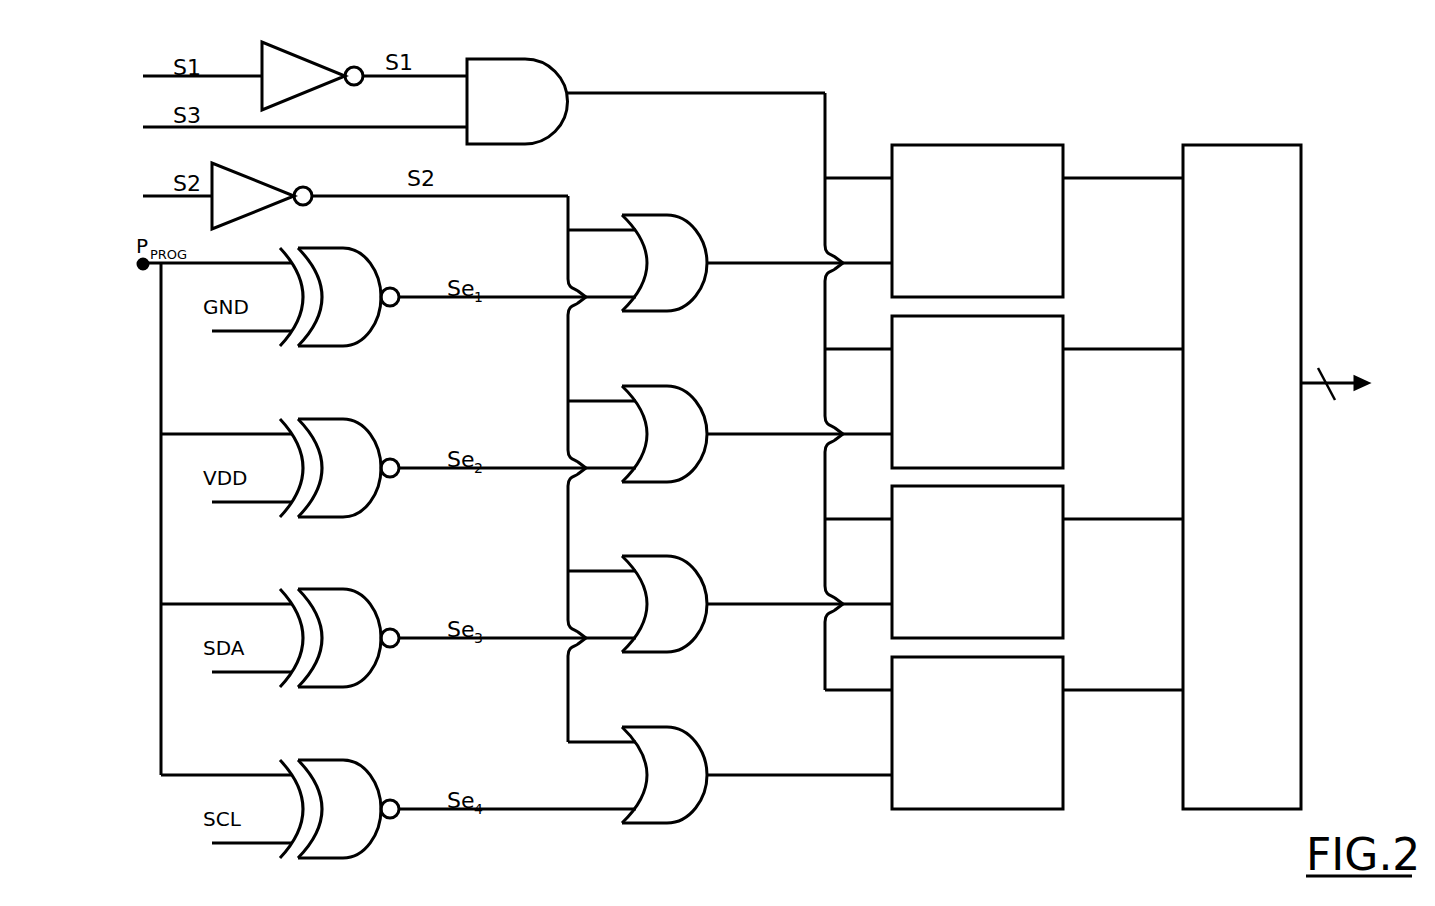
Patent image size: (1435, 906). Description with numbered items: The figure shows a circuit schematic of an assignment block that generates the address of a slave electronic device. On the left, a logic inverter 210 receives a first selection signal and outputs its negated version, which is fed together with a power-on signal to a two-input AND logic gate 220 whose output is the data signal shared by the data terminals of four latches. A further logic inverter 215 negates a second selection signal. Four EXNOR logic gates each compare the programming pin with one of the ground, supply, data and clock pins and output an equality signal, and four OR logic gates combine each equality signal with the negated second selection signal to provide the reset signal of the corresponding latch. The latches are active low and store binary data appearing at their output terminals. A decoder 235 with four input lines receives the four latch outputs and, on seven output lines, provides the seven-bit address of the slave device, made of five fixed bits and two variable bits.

The logic inverter 210 is at (325, 87).
The further logic inverter 215 is at (252, 177).
The AND logic gate 220 is at (552, 136).
The decoder 235 is at (1254, 472).